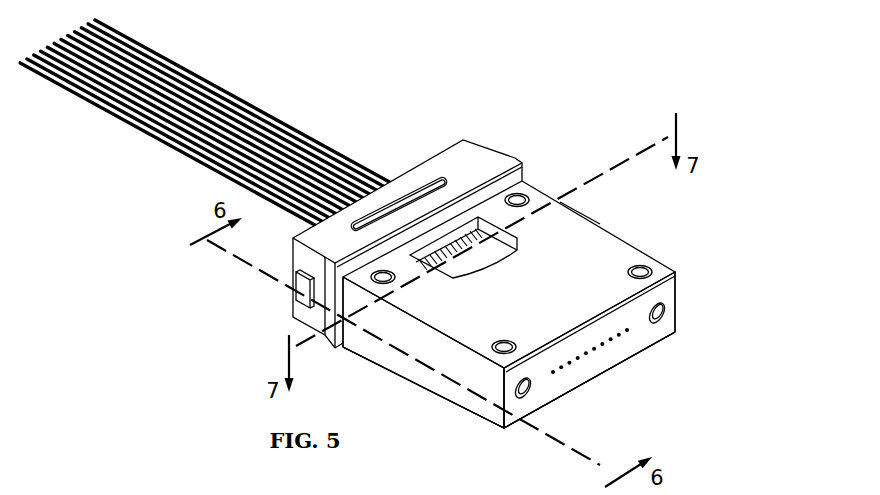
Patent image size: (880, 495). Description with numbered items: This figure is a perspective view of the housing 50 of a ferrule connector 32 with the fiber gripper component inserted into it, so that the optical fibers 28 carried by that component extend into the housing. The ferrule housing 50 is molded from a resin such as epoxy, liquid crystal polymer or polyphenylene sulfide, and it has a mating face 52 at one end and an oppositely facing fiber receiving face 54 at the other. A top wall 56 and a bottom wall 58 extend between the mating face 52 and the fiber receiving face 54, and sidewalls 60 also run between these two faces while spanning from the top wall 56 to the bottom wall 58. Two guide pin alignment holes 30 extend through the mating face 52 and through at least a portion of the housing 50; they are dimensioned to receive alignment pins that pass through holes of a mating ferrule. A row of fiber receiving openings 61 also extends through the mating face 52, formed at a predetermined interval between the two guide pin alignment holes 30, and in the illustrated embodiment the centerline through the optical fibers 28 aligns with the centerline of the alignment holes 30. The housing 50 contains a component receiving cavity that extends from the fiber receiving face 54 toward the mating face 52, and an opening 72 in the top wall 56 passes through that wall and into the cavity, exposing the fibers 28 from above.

The optical fibers 28 is at (197, 120).
The guide pin alignment holes 30 is at (665, 313).
The ferrule connector 32 is at (592, 213).
The ferrule housing 50 is at (610, 255).
The mating face 52 is at (663, 332).
The fiber receiving face 54 is at (293, 262).
The top wall 56 is at (538, 200).
The bottom wall 58 is at (440, 393).
The sidewalls 60 is at (397, 342).
The fiber receiving openings 61 is at (593, 352).
The opening 72 is at (481, 236).